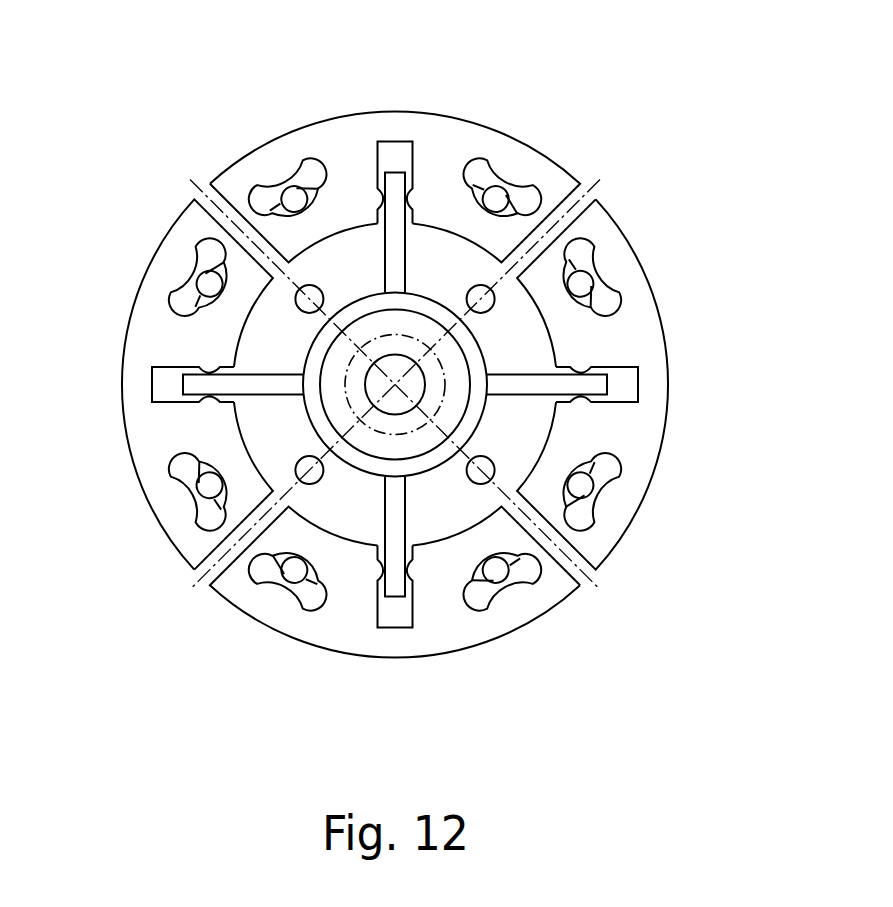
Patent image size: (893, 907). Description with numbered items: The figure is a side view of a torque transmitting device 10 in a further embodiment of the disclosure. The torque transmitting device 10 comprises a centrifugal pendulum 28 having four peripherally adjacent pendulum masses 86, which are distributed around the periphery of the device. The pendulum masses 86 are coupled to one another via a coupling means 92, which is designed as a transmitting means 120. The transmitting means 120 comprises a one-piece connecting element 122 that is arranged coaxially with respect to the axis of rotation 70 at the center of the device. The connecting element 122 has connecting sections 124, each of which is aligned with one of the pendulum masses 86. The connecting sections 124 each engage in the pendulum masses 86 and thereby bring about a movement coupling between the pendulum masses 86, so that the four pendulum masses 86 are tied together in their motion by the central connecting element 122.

The torque transmitting device 10 is at (397, 391).
The centrifugal pendulum 28 is at (397, 391).
The pendulum mass 86 is at (267, 118).
The connecting section 124 is at (397, 183).
The transmitting means 120 is at (475, 408).
The connecting element 122 is at (472, 422).
The coupling means 92 is at (529, 446).
The axis of rotation 70 is at (355, 380).